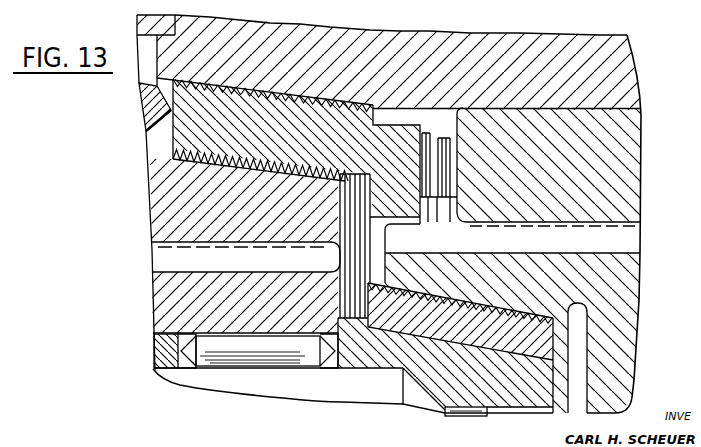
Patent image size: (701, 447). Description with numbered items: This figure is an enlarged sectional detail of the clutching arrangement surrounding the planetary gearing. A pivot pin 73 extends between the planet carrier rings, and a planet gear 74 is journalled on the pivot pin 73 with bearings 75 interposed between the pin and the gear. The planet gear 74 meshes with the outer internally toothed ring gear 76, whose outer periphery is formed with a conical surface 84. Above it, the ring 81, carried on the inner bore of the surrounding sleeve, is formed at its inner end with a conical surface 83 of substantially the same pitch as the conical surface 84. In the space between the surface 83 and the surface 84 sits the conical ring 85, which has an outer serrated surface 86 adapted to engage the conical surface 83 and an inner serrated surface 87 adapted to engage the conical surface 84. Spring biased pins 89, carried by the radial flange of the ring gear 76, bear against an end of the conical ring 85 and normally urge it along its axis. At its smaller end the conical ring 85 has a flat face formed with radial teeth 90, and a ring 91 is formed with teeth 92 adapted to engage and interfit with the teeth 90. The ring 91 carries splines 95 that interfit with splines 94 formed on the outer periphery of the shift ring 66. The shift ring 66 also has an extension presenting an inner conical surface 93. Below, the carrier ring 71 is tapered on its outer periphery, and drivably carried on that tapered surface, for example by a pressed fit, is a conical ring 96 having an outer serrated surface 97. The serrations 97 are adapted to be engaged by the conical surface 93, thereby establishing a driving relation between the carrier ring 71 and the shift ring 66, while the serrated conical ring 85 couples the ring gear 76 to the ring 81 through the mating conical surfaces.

The ring 81 is at (627, 86).
The conical surface 83 is at (300, 97).
The outer serrated surface 86 is at (225, 85).
The spring biased pins 89 is at (141, 99).
The conical ring 85 is at (173, 127).
The ring 91 is at (637, 141).
The radial teeth 90 is at (424, 133).
The teeth 92 is at (445, 138).
The inner serrated surface 87 is at (177, 160).
The conical surface 84 is at (158, 199).
The ring gear 76 is at (166, 229).
The planet gear 74 is at (170, 310).
The bearings 75 is at (257, 353).
The splines 94 is at (409, 243).
The splines 95 is at (637, 231).
The shift ring 66 is at (638, 286).
The conical ring 96 is at (513, 348).
The inner conical surface 93 is at (403, 291).
The serrated surface 97 is at (468, 300).
The carrier ring 71 is at (440, 395).
The pivot pin 73 is at (342, 404).